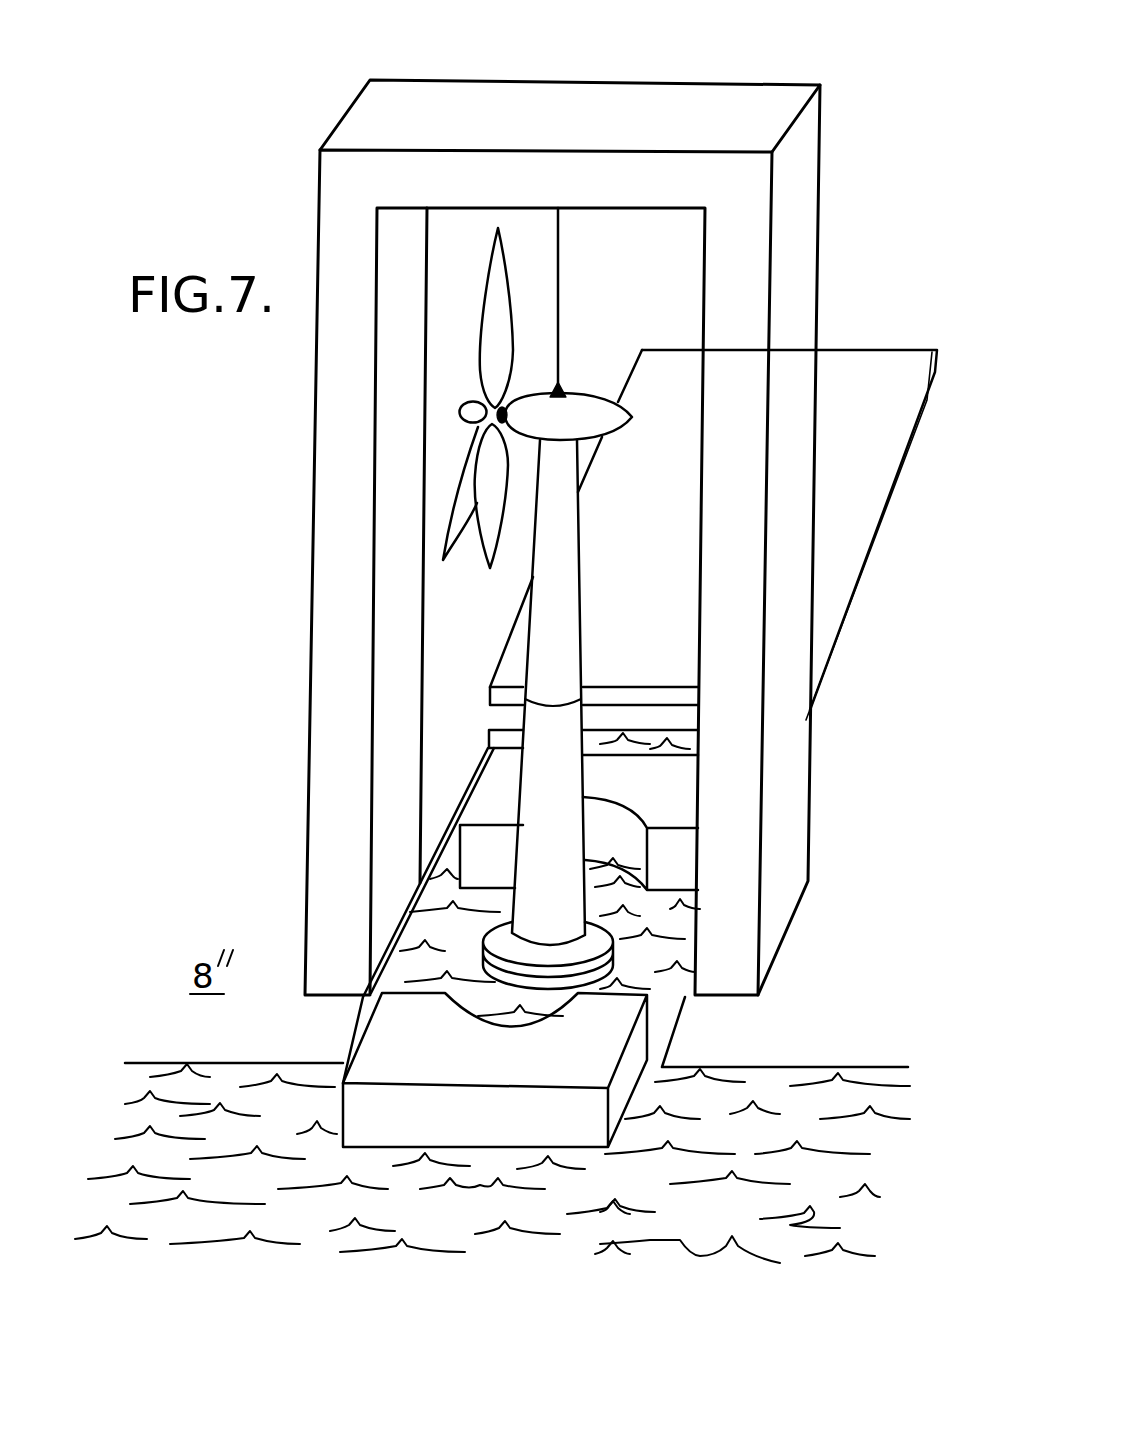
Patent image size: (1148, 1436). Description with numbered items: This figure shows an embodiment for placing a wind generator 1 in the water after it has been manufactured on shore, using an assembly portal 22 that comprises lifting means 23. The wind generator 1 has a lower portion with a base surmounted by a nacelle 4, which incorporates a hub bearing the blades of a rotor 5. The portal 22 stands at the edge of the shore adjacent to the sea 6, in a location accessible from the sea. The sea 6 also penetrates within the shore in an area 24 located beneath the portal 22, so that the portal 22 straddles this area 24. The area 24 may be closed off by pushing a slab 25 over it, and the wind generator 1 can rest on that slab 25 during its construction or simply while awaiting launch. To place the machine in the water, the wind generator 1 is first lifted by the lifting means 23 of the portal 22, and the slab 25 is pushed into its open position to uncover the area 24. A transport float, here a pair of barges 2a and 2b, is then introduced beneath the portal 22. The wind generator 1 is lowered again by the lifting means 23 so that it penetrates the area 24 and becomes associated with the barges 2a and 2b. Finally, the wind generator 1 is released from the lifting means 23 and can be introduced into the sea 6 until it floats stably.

The wind generator 1 is at (596, 593).
The barge 2a is at (563, 1047).
The barge 2b is at (648, 805).
The nacelle 4 is at (588, 410).
The rotor 5 is at (498, 292).
The sea 6 is at (812, 1135).
The assembly portal 22 is at (620, 103).
The lifting means 23 is at (562, 300).
The area 24 is at (512, 746).
The slab 25 is at (867, 387).